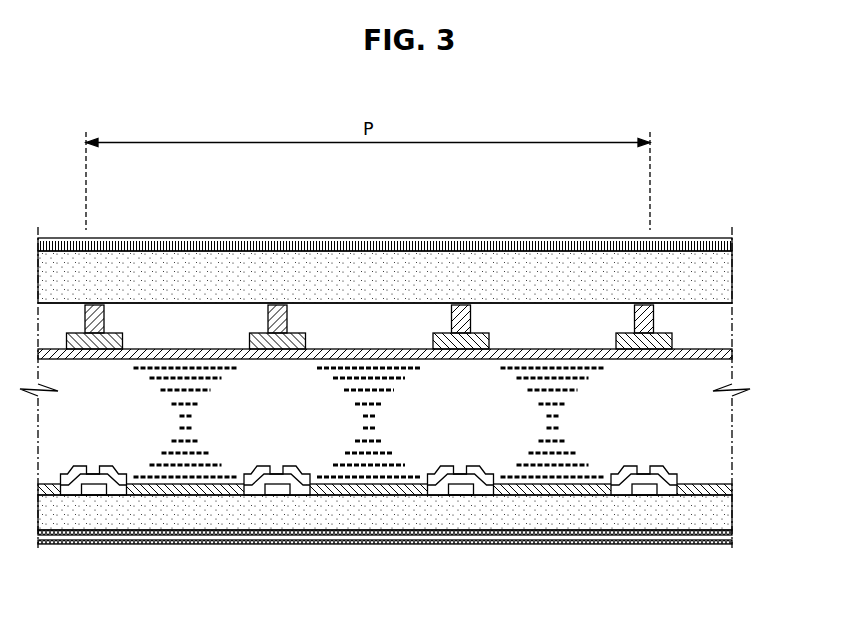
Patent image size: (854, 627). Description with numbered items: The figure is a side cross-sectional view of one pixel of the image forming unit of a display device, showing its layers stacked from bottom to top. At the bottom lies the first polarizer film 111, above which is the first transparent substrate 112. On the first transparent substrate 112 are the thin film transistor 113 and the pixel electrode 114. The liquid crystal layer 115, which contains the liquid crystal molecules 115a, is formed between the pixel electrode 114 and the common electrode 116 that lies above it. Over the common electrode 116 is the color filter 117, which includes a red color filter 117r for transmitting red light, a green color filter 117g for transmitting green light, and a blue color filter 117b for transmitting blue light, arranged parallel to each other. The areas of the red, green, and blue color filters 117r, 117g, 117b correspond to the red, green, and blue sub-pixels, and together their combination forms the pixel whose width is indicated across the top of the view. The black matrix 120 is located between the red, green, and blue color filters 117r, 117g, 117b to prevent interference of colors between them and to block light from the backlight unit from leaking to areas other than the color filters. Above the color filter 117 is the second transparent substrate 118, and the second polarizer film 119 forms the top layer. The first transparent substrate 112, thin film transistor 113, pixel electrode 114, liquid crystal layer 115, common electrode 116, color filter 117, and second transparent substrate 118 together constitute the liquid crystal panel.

The first polarizer film 111 is at (729, 537).
The first transparent substrate 112 is at (729, 516).
The thin film transistor 113 is at (661, 476).
The pixel electrode 114 is at (729, 488).
The liquid crystal layer 115 is at (470, 477).
The liquid crystal molecules 115a is at (372, 480).
The common electrode 116 is at (729, 357).
The color filter 117 is at (422, 270).
The red color filter 117r is at (228, 317).
The green color filter 117g is at (415, 317).
The blue color filter 117b is at (593, 317).
The second transparent substrate 118 is at (729, 281).
The second polarizer film 119 is at (729, 245).
The black matrix 120 is at (663, 338).